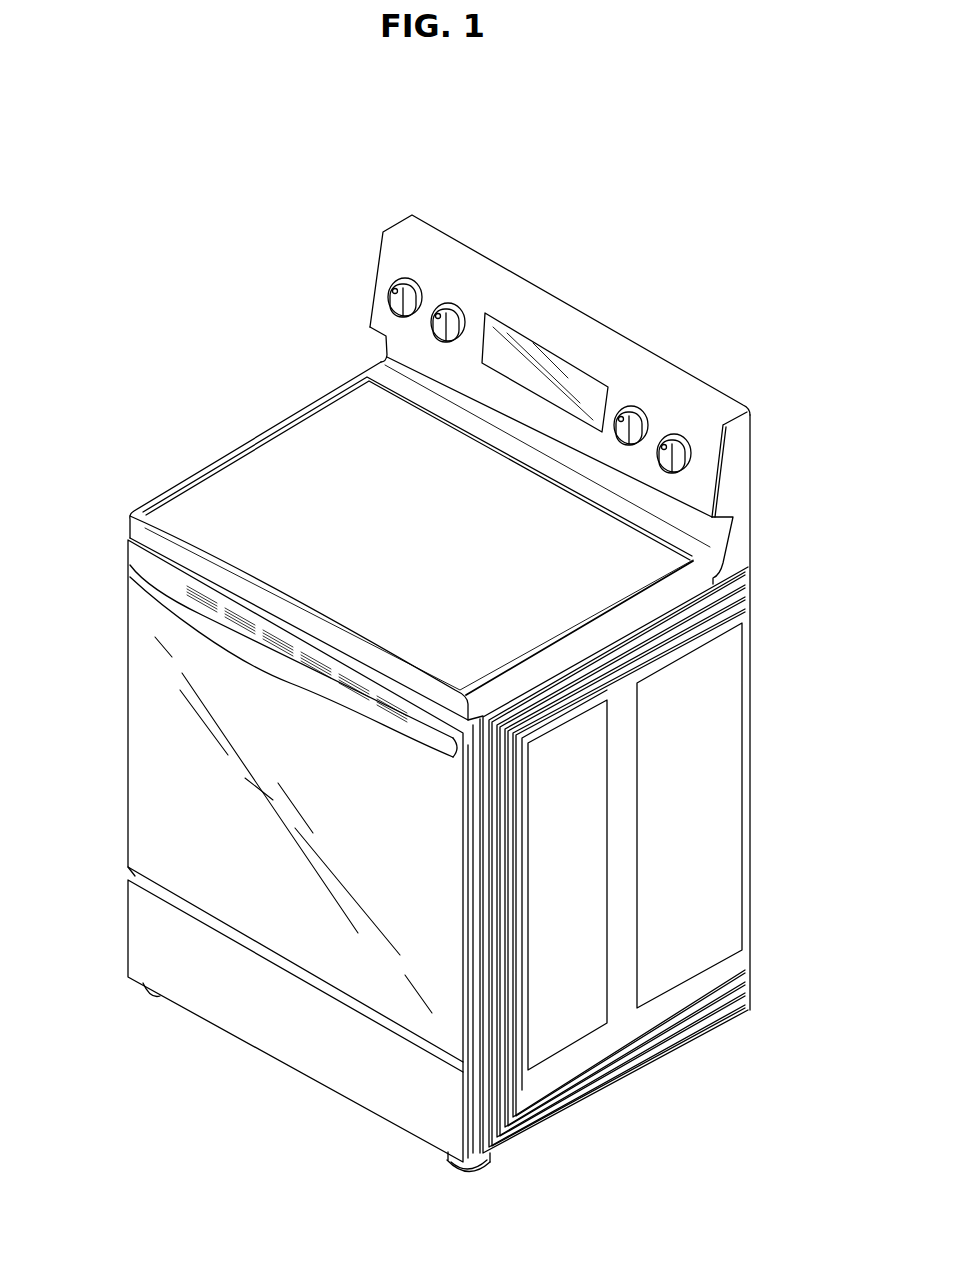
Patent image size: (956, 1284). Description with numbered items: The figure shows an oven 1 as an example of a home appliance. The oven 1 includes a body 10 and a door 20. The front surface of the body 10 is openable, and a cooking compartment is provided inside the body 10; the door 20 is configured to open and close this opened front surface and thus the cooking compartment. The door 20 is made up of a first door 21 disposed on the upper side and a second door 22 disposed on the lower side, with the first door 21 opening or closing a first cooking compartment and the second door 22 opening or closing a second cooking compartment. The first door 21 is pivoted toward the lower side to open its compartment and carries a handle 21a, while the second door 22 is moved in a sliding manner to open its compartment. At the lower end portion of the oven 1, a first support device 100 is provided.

The oven 1 is at (325, 180).
The body 10 is at (751, 740).
The door 20 is at (77, 958).
The first door 21 is at (147, 750).
The handle 21a is at (143, 573).
The second door 22 is at (147, 923).
The first support device 100 is at (490, 1167).